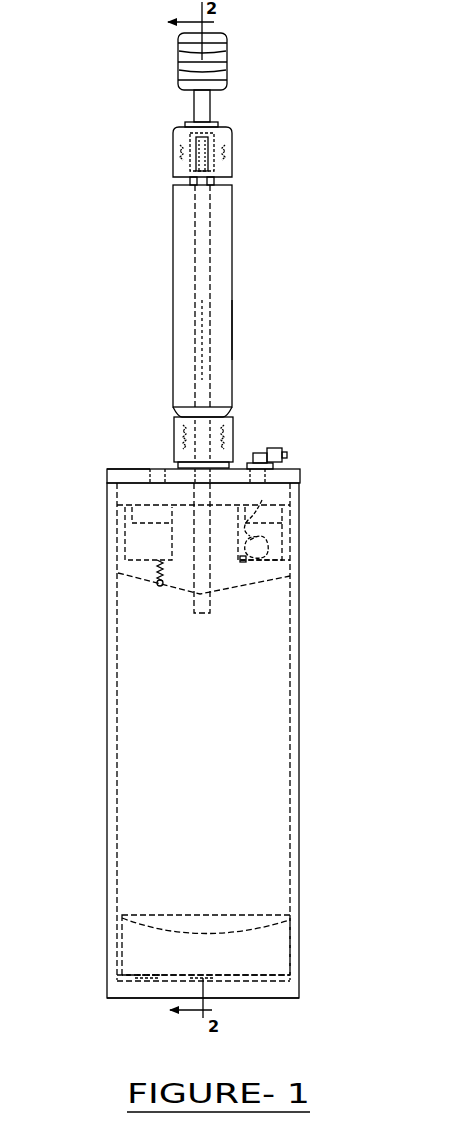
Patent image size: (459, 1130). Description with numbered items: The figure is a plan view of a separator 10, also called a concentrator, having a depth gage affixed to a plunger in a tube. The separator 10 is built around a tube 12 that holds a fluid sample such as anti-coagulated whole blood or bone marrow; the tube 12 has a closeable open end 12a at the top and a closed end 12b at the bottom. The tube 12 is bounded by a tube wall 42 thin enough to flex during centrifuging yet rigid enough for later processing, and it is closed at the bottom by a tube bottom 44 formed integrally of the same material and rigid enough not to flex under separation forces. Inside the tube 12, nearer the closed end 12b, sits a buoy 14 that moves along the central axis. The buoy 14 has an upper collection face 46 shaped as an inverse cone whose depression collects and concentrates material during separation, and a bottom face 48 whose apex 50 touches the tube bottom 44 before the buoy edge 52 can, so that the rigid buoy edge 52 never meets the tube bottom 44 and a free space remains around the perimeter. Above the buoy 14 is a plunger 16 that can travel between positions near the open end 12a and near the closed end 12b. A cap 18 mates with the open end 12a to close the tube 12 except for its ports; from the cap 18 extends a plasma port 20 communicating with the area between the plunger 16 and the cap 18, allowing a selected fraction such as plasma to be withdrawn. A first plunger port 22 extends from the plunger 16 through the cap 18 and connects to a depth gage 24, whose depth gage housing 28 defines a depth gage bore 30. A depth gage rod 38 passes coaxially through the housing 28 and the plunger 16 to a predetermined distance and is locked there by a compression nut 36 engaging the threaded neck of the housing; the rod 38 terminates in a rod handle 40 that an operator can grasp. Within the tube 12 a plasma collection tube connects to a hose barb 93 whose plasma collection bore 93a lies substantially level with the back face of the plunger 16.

The separator 10 is at (118, 265).
The tube 12 is at (302, 637).
The open end 12a is at (303, 483).
The closed end 12b is at (303, 993).
The buoy 14 is at (276, 938).
The plunger 16 is at (138, 600).
The cap 18 is at (128, 468).
The plasma port 20 is at (262, 450).
The first plunger port 22 is at (228, 440).
The depth gage 24 is at (238, 216).
The depth gage housing 28 is at (232, 327).
The depth gage bore 30 is at (210, 255).
The compression nut 36 is at (228, 139).
The depth gage rod 38 is at (200, 342).
The rod handle 40 is at (215, 56).
The tube wall 42 is at (292, 762).
The tube bottom 44 is at (275, 997).
The collection face 46 is at (228, 930).
The bottom face 48 is at (140, 983).
The apex 50 is at (203, 983).
The buoy edge 52 is at (142, 976).
The hose barb 93 is at (300, 556).
The plasma collection bore 93a is at (290, 578).